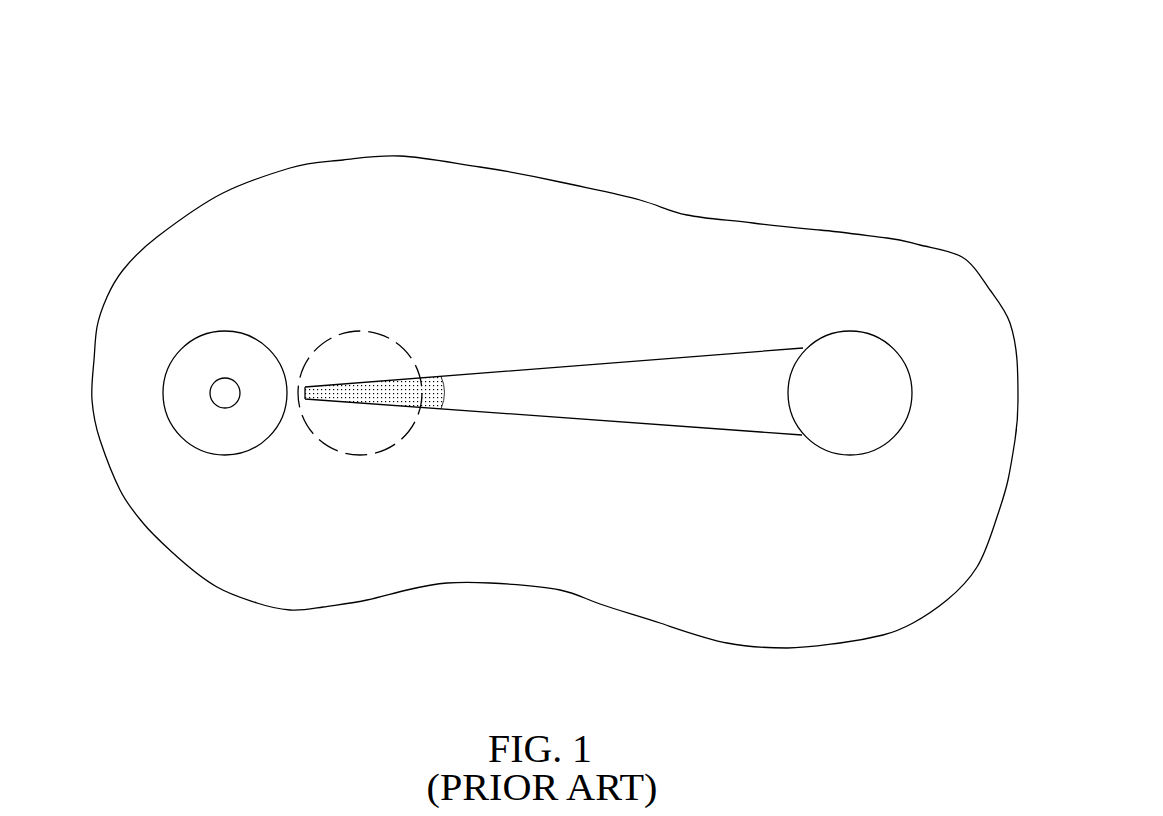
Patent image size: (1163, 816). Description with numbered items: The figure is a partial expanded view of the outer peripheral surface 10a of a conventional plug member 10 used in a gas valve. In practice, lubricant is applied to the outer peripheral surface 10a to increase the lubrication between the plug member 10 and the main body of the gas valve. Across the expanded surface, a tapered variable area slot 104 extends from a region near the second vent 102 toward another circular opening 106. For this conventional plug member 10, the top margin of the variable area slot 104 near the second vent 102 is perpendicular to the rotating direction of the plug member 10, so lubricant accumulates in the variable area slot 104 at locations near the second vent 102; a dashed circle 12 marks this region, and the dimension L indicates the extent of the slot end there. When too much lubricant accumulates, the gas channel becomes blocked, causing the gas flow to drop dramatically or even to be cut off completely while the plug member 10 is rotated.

The plug member 10 is at (962, 258).
The outer peripheral surface 10a is at (665, 260).
The second vent 102 is at (217, 405).
The variable area slot 104 is at (488, 411).
The second hole 106 is at (912, 393).
The stress region 12 is at (376, 331).
The length of slot end L is at (372, 395).